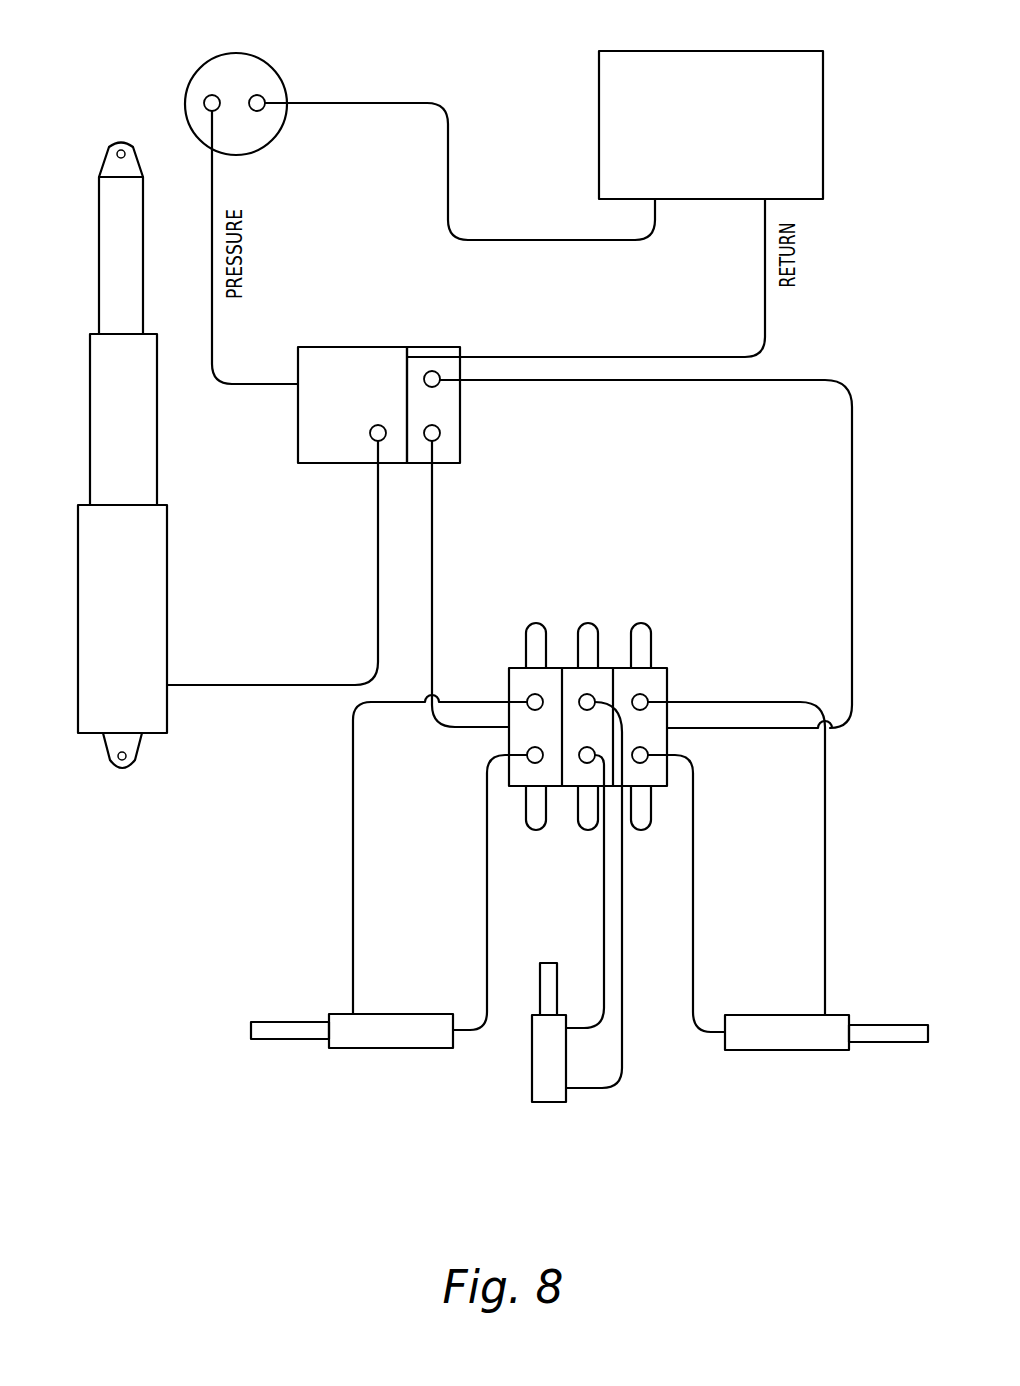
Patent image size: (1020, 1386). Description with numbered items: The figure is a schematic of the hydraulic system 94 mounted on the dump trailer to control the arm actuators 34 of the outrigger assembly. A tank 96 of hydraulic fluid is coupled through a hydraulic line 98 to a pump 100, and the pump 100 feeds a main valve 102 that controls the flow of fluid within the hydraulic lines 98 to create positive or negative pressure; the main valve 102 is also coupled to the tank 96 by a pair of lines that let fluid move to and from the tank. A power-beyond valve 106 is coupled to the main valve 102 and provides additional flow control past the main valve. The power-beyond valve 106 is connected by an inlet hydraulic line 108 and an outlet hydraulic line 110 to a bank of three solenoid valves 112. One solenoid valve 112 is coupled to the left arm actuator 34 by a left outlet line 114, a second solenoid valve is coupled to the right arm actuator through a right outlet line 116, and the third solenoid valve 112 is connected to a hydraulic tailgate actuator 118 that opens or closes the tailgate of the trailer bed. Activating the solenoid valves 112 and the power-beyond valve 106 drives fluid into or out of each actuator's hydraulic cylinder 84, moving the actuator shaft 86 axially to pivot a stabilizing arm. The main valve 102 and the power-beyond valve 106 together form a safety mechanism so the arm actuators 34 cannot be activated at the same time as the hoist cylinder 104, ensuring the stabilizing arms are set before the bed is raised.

The arm actuator 34 is at (572, 1013).
The hydraulic cylinder 84 is at (415, 1022).
The actuator shaft 86 is at (277, 1025).
The hydraulic system 94 is at (305, 92).
The tank 96 is at (786, 50).
The hydraulic line 98 is at (447, 201).
The pump 100 is at (258, 135).
The main valve 102 is at (300, 372).
The hoist cylinder 104 is at (155, 562).
The power-beyond valve 106 is at (462, 433).
The inlet hydraulic line 108 is at (434, 527).
The outlet hydraulic line 110 is at (853, 440).
The solenoid valve 112 is at (670, 676).
The left outlet line 114 is at (353, 874).
The right outlet line 116 is at (826, 848).
The hydraulic tailgate actuator 118 is at (532, 1078).